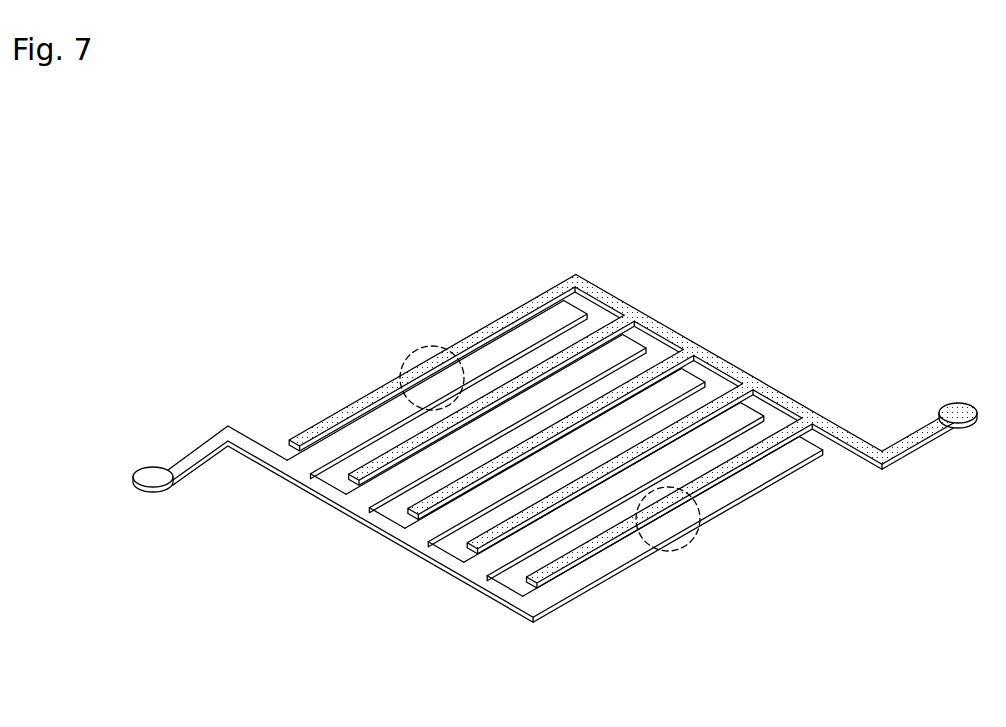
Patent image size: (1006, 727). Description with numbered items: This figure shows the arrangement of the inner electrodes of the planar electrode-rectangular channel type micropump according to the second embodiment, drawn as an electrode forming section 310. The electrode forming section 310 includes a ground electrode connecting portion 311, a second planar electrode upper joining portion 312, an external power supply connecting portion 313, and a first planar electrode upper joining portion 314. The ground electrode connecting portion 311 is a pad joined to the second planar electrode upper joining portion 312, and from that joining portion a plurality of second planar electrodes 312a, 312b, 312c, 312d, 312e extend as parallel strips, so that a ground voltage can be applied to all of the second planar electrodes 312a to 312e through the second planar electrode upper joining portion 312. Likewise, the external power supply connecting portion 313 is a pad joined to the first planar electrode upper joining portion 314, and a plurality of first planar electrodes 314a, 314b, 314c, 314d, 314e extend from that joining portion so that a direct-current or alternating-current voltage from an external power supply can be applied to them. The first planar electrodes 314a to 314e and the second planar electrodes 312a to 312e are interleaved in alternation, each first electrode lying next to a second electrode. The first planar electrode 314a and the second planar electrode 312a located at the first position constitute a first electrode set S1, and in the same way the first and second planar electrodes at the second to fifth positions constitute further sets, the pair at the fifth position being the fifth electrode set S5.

The electrode forming section 310 is at (875, 316).
The ground electrode connecting portion 311 is at (150, 467).
The second planar electrode upper joining portion 312 is at (210, 441).
The second planar electrode 312a is at (330, 455).
The second planar electrode 312b is at (390, 493).
The second planar electrode 312c is at (447, 528).
The second planar electrode 312d is at (505, 557).
The second planar electrode 312e is at (587, 578).
The external power supply connecting portion 313 is at (958, 404).
The first planar electrode upper joining portion 314 is at (860, 441).
The first planar electrode 314a is at (524, 303).
The first planar electrode 314b is at (623, 316).
The first planar electrode 314c is at (683, 351).
The first planar electrode 314d is at (742, 385).
The first planar electrode 314e is at (801, 419).
The first electrode set S1 is at (432, 346).
The fifth electrode set S5 is at (690, 542).